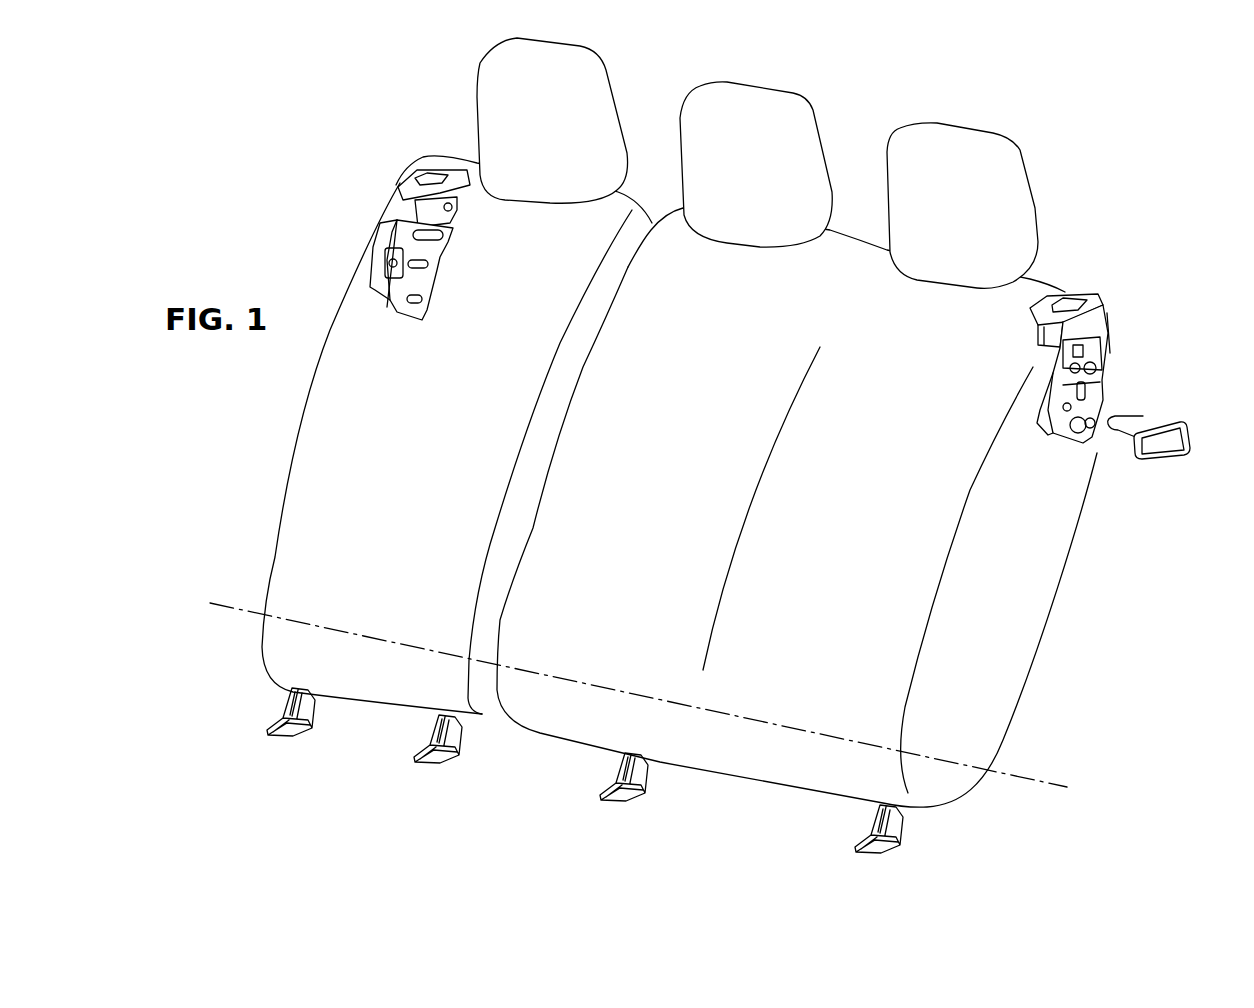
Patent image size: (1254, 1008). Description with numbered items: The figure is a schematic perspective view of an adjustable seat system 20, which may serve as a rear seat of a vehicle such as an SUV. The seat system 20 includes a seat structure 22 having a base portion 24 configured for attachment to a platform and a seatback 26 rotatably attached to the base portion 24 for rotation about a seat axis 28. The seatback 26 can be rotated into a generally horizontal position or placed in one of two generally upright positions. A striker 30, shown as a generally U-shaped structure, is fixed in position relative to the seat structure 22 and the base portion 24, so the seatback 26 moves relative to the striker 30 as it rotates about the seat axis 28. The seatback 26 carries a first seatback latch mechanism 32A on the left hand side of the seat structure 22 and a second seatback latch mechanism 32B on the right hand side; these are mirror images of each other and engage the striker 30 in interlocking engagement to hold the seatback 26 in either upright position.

The adjustable seat system 20 is at (979, 264).
The seat structure 22 is at (1063, 575).
The base portion 24 is at (893, 843).
The seatback 26 is at (1053, 513).
The seat axis 28 is at (1038, 782).
The striker 30 is at (1148, 417).
The first seatback latch mechanism 32A is at (398, 212).
The second seatback latch mechanism 32B is at (1107, 330).